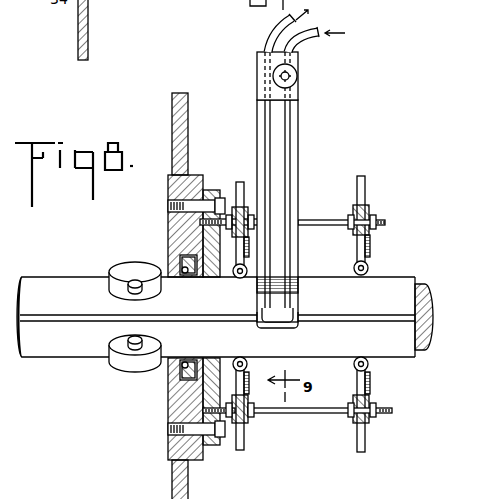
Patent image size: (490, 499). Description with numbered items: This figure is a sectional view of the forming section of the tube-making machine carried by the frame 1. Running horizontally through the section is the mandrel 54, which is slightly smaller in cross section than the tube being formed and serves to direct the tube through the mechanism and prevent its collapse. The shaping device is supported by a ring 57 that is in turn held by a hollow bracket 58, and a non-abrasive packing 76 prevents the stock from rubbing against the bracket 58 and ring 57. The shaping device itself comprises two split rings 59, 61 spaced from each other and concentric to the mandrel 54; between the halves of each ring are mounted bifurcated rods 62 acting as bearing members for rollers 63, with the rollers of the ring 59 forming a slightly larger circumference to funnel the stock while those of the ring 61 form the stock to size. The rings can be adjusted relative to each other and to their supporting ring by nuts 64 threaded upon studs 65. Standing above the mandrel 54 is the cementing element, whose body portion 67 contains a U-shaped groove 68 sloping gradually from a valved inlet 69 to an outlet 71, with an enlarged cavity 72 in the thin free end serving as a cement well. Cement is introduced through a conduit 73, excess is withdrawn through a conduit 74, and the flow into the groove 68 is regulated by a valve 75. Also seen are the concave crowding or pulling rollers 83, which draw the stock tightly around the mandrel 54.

The frame 1 is at (90, 25).
The mandrel 54 is at (425, 298).
The ring 57 is at (207, 192).
The hollow bracket 58 is at (168, 222).
The ring 59 is at (370, 210).
The ring 61 is at (242, 430).
The bifurcated rods 62 is at (240, 182).
The rollers 63 is at (238, 279).
The nuts 64 is at (255, 418).
The studs 65 is at (321, 218).
The body portion 67 is at (296, 160).
The U-shaped groove 68 is at (287, 130).
The valved inlet 69 is at (297, 77).
The outlet 71 is at (262, 75).
The enlarged cavity 72 is at (295, 312).
The conduit 73 is at (312, 30).
The conduit 74 is at (268, 40).
The valve 75 is at (298, 72).
The non-abrasive packing 76 is at (170, 378).
The crowding or pulling rollers 83 is at (117, 262).